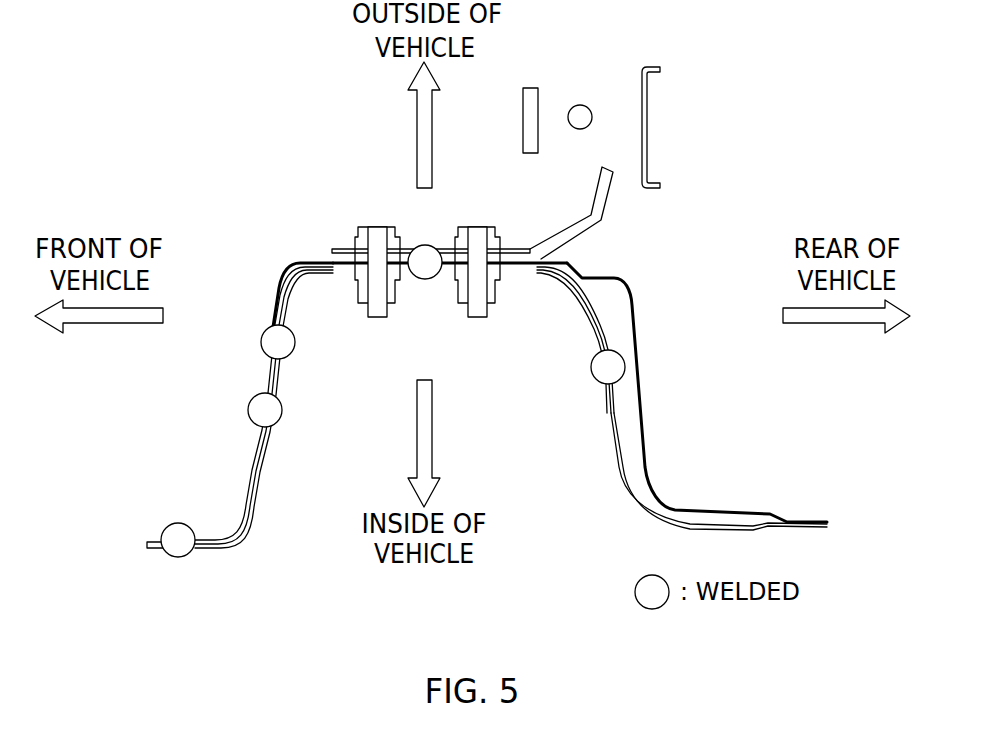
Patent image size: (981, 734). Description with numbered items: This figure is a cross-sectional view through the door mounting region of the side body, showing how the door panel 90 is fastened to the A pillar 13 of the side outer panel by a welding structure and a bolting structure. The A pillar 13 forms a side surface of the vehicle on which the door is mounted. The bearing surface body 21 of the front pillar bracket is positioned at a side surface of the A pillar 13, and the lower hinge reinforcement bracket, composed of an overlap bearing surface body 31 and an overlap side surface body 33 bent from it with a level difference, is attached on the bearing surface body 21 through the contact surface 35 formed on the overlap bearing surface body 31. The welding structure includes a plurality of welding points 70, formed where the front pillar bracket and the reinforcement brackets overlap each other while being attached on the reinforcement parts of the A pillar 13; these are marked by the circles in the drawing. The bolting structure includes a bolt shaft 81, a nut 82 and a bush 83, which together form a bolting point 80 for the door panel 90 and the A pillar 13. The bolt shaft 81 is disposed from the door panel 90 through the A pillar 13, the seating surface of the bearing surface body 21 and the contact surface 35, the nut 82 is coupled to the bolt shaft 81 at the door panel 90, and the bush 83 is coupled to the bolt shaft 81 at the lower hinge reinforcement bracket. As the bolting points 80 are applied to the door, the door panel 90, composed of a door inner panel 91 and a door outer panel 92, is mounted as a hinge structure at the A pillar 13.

The A pillar 13 is at (620, 453).
The bearing surface body 21 is at (247, 455).
The overlap bearing surface body 31 is at (260, 467).
The overlap side surface body 33 is at (213, 548).
The contact surface 35 is at (428, 279).
The welding point 70 is at (173, 532).
The bolting point 80 is at (411, 211).
The bolt shaft 81 is at (418, 233).
The nut 82 is at (357, 246).
The bush 83 is at (313, 262).
The door panel 90 is at (678, 344).
The door inner panel 91 is at (620, 279).
The door outer panel 92 is at (604, 215).